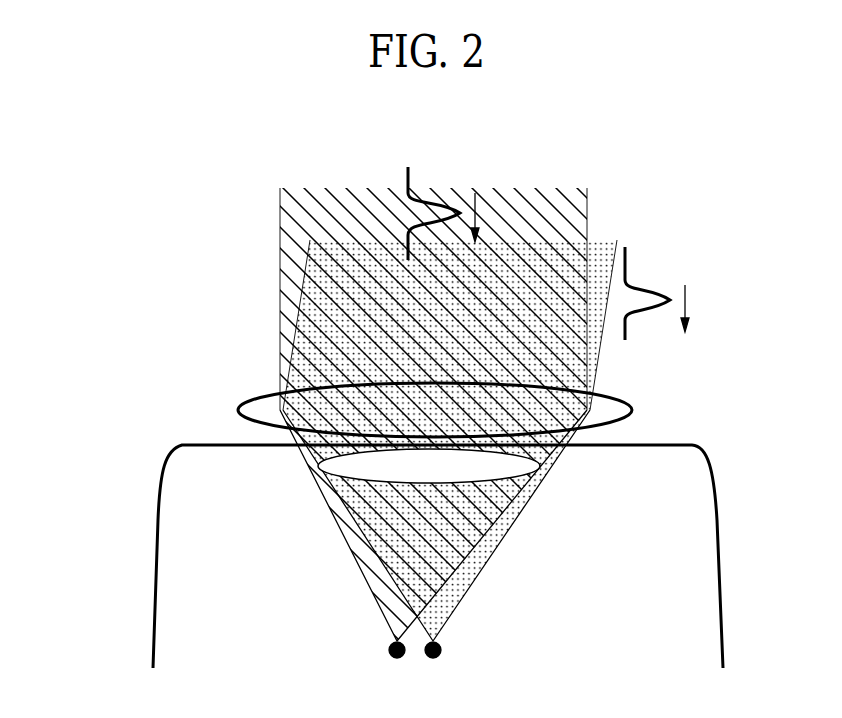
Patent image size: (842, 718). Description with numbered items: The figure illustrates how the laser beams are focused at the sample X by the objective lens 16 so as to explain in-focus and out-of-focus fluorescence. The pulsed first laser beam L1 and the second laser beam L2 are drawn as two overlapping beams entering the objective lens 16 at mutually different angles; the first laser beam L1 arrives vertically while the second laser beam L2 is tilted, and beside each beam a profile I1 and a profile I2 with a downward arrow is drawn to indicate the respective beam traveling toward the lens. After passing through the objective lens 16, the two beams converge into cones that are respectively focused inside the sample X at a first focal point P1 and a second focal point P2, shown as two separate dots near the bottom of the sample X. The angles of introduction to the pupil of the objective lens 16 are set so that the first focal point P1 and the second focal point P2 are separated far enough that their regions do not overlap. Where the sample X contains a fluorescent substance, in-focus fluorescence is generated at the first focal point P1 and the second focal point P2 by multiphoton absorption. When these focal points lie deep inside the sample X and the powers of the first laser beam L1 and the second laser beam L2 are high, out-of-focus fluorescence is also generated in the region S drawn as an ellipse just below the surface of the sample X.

The objective lens 16 is at (238, 410).
The first laser beam L1 is at (280, 205).
The second laser beam L2 is at (597, 365).
The sample X is at (157, 560).
The region S is at (503, 484).
The first focal point P1 is at (441, 650).
The second focal point P2 is at (388, 650).
The intensity distribution of first laser light I1 is at (443, 213).
The intensity distribution of second laser light I2 is at (657, 298).